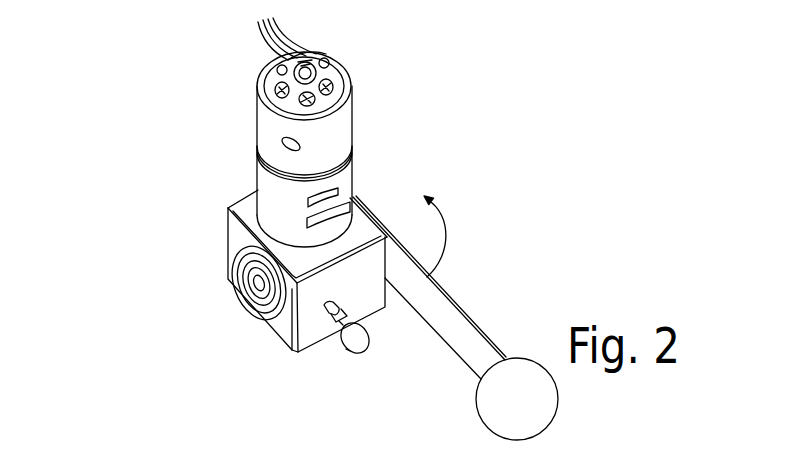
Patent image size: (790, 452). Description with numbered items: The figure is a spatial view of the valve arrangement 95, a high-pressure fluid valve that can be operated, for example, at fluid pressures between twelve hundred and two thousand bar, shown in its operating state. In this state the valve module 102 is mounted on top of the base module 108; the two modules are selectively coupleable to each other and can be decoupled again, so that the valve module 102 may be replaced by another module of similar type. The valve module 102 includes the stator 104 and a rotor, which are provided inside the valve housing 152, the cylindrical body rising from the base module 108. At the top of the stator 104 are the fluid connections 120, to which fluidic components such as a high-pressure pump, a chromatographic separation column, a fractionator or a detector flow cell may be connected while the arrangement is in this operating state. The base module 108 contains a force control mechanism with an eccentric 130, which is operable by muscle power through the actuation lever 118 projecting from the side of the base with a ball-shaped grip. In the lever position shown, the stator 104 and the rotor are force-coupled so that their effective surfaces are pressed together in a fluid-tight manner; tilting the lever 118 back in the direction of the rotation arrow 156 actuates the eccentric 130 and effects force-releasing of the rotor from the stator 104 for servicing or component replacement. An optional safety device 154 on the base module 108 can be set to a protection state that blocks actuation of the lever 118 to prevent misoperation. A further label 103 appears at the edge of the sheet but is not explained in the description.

The valve arrangement 95 is at (133, 188).
The valve module 102 is at (218, 72).
The stator 104 is at (351, 86).
The base module 108 is at (218, 155).
The actuation lever 118 is at (470, 350).
The fluid connections 120 is at (287, 30).
The eccentric 130 is at (245, 283).
The valve housing 152 is at (330, 136).
The safety device 154 is at (338, 333).
The rotation arrow 156 is at (443, 237).
The base 103 is at (404, 446).